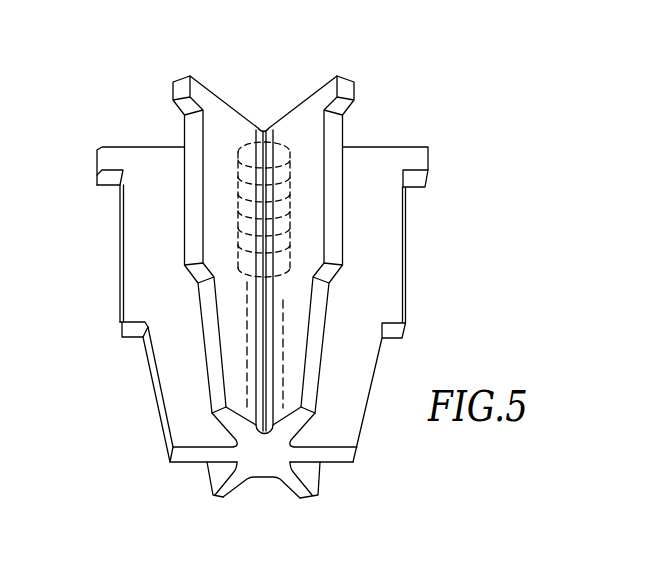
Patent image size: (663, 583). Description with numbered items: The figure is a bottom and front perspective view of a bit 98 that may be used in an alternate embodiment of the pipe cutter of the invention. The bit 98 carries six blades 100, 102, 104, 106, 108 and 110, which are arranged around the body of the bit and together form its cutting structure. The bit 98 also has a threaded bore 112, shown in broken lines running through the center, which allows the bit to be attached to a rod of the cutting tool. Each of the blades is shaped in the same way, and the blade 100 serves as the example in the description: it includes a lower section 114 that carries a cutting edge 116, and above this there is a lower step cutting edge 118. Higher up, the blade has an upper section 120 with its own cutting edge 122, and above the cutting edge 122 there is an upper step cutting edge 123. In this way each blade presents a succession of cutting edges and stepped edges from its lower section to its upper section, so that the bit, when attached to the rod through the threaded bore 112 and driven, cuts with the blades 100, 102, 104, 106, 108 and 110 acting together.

The bit 98 is at (351, 70).
The blade 100 is at (183, 461).
The blade 102 is at (227, 495).
The blade 104 is at (308, 499).
The blade 106 is at (355, 461).
The blade 108 is at (338, 134).
The blade 110 is at (184, 78).
The threaded bore 112 is at (270, 126).
The lower section 114 is at (172, 353).
The cutting edge 116 is at (153, 393).
The lower step cutting edge 118 is at (133, 325).
The upper section 120 is at (148, 163).
The cutting edge 122 is at (120, 230).
The upper step cutting edge 123 is at (103, 187).